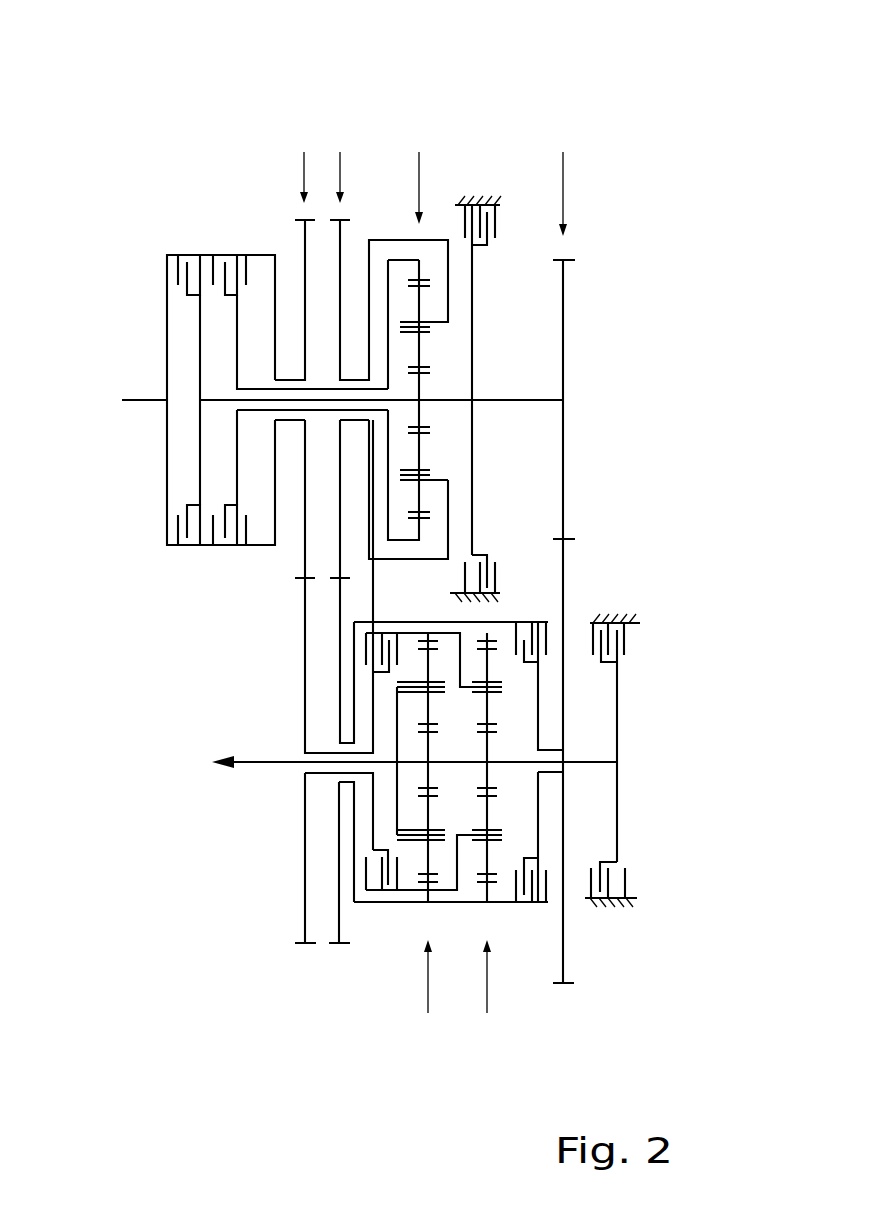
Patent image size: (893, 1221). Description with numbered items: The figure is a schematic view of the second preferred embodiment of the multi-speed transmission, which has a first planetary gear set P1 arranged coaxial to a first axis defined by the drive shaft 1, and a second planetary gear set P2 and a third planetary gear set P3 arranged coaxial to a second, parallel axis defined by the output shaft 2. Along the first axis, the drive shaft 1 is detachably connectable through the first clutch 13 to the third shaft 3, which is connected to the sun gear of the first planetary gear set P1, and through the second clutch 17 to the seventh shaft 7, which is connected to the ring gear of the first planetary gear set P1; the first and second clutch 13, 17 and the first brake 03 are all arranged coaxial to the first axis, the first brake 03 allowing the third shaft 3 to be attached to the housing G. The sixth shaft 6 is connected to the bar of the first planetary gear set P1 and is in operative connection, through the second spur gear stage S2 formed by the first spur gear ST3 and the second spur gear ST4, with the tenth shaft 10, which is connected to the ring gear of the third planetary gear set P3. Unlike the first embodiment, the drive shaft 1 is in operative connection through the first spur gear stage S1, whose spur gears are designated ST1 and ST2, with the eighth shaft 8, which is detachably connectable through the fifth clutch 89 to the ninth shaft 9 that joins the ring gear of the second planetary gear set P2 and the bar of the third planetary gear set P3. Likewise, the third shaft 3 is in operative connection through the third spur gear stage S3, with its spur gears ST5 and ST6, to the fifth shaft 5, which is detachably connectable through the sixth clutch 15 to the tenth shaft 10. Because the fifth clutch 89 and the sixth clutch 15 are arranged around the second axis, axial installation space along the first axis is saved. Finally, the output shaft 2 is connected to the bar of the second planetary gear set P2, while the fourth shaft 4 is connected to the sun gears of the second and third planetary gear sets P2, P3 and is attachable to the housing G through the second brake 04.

The drive shaft 1 is at (137, 402).
The output shaft 2 is at (258, 765).
The third shaft 3 is at (533, 398).
The fourth shaft 4 is at (618, 742).
The fifth shaft 5 is at (567, 555).
The sixth shaft 6 is at (337, 532).
The seventh shaft 7 is at (380, 257).
The eighth shaft 8 is at (305, 652).
The ninth shaft 9 is at (458, 660).
The tenth shaft 10 is at (340, 590).
The first clutch 13 is at (178, 268).
The sixth clutch 15 is at (547, 620).
The second clutch 17 is at (220, 257).
The fifth clutch 89 is at (367, 658).
The first brake 03 is at (500, 225).
The second brake 04 is at (625, 645).
The housing G is at (608, 905).
The first spur gear stage S1 is at (303, 160).
The second spur gear stage S2 is at (338, 160).
The third spur gear stage S3 is at (563, 176).
The first planetary gear set P1 is at (417, 170).
The second planetary gear set P2 is at (427, 998).
The third planetary gear set P3 is at (485, 998).
The first spur gear of the first spur gear stage ST1 is at (297, 218).
The second spur gear of the first spur gear stage ST2 is at (297, 947).
The first spur gear of the second spur gear stage ST3 is at (330, 218).
The second spur gear of the second spur gear stage ST4 is at (343, 947).
The first spur gear of the third spur gear stage ST5 is at (572, 258).
The second spur gear of the third spur gear stage ST6 is at (566, 987).